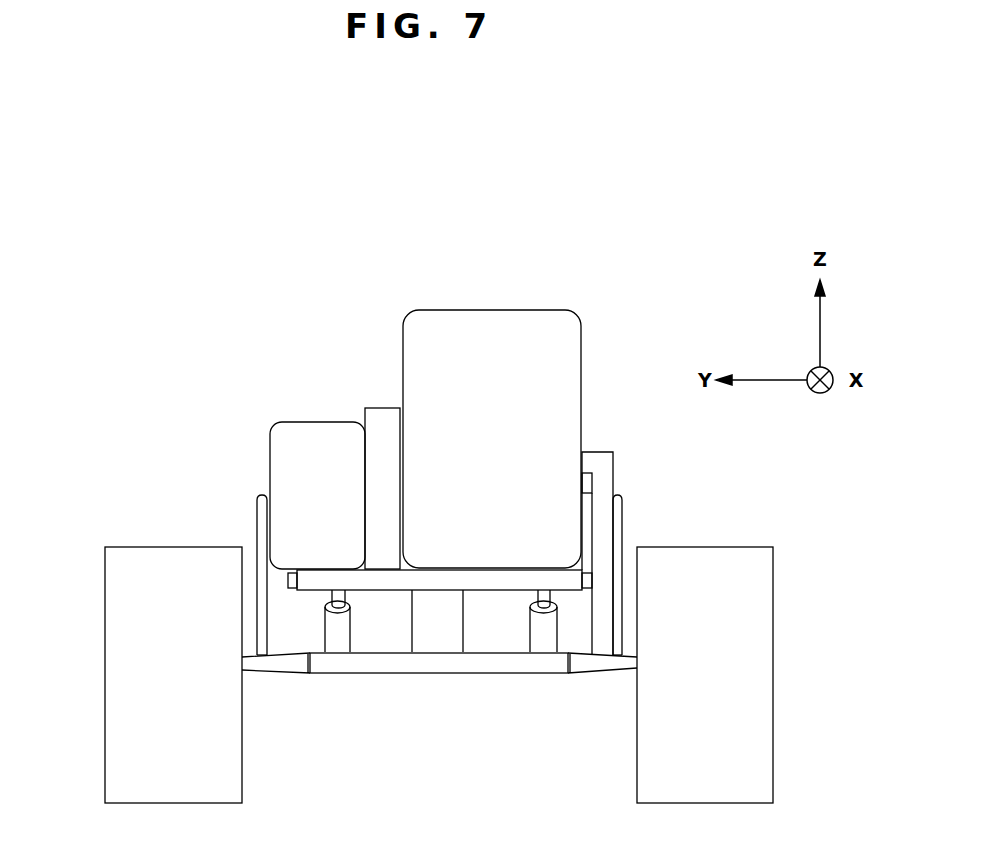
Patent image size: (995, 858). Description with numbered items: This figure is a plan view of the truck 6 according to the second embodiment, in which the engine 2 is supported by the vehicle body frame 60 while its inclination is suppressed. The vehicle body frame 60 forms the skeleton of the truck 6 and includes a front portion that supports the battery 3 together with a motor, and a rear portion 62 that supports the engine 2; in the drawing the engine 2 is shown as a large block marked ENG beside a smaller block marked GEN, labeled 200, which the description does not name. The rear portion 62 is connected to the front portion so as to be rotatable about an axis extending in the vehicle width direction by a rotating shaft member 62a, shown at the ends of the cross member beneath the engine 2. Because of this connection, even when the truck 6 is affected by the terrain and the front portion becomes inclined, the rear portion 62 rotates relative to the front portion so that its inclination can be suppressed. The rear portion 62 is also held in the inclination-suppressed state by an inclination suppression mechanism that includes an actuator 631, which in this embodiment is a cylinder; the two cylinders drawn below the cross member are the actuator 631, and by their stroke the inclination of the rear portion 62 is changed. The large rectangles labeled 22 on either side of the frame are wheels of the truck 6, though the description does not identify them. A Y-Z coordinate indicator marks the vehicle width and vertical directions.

The engine 2 is at (470, 310).
The generator 200 is at (312, 418).
The battery 3 is at (257, 512).
The truck 6 is at (607, 238).
The vehicle body frame 60 is at (615, 424).
The rear portion 62 is at (310, 600).
The rotating shaft member 62a is at (293, 592).
The actuator 631 is at (350, 642).
The wheel 22 is at (105, 620).